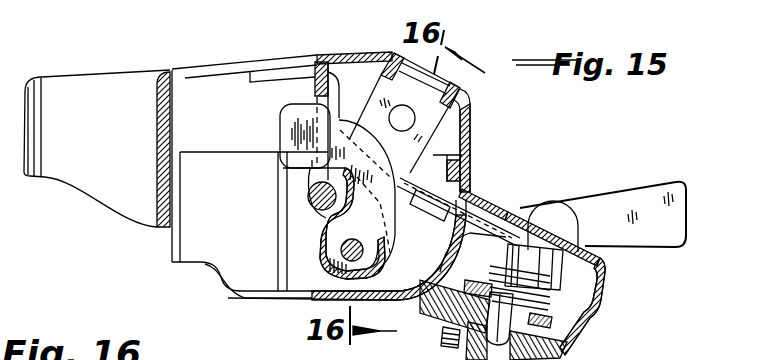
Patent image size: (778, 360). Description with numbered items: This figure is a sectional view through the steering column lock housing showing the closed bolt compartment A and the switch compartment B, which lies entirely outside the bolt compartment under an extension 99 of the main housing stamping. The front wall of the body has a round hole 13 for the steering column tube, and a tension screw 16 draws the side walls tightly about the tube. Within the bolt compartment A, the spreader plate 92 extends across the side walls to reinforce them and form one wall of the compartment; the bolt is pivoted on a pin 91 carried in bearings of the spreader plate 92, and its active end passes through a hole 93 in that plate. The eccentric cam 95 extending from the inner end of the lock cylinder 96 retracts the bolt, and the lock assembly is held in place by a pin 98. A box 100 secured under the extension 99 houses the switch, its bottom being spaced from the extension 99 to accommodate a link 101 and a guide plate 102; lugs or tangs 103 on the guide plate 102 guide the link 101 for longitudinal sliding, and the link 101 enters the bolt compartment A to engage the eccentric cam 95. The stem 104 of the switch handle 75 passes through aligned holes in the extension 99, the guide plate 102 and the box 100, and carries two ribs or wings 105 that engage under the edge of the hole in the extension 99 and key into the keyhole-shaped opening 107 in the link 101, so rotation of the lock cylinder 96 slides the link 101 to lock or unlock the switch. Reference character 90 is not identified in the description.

The round hole 13 is at (182, 72).
The hole 93 is at (326, 96).
The pin 98 is at (409, 118).
The lock cylinder 96 is at (457, 79).
The closed bolt compartment A is at (455, 127).
The guide plate 102 is at (464, 166).
The lugs or tangs 103 is at (439, 185).
The extension 99 is at (495, 200).
The keyhole-shaped opening 107 is at (492, 204).
The ribs or wings 105 is at (530, 207).
The stem 104 is at (536, 244).
The switch handle 75 is at (658, 195).
The spreader plate 92 is at (317, 177).
The tension screw 16 is at (304, 200).
The pin 91 is at (340, 253).
The link 101 is at (406, 192).
The eccentric cam 95 is at (388, 244).
The lever end 90 is at (380, 262).
The switch compartment B is at (574, 311).
The box 100 is at (585, 330).